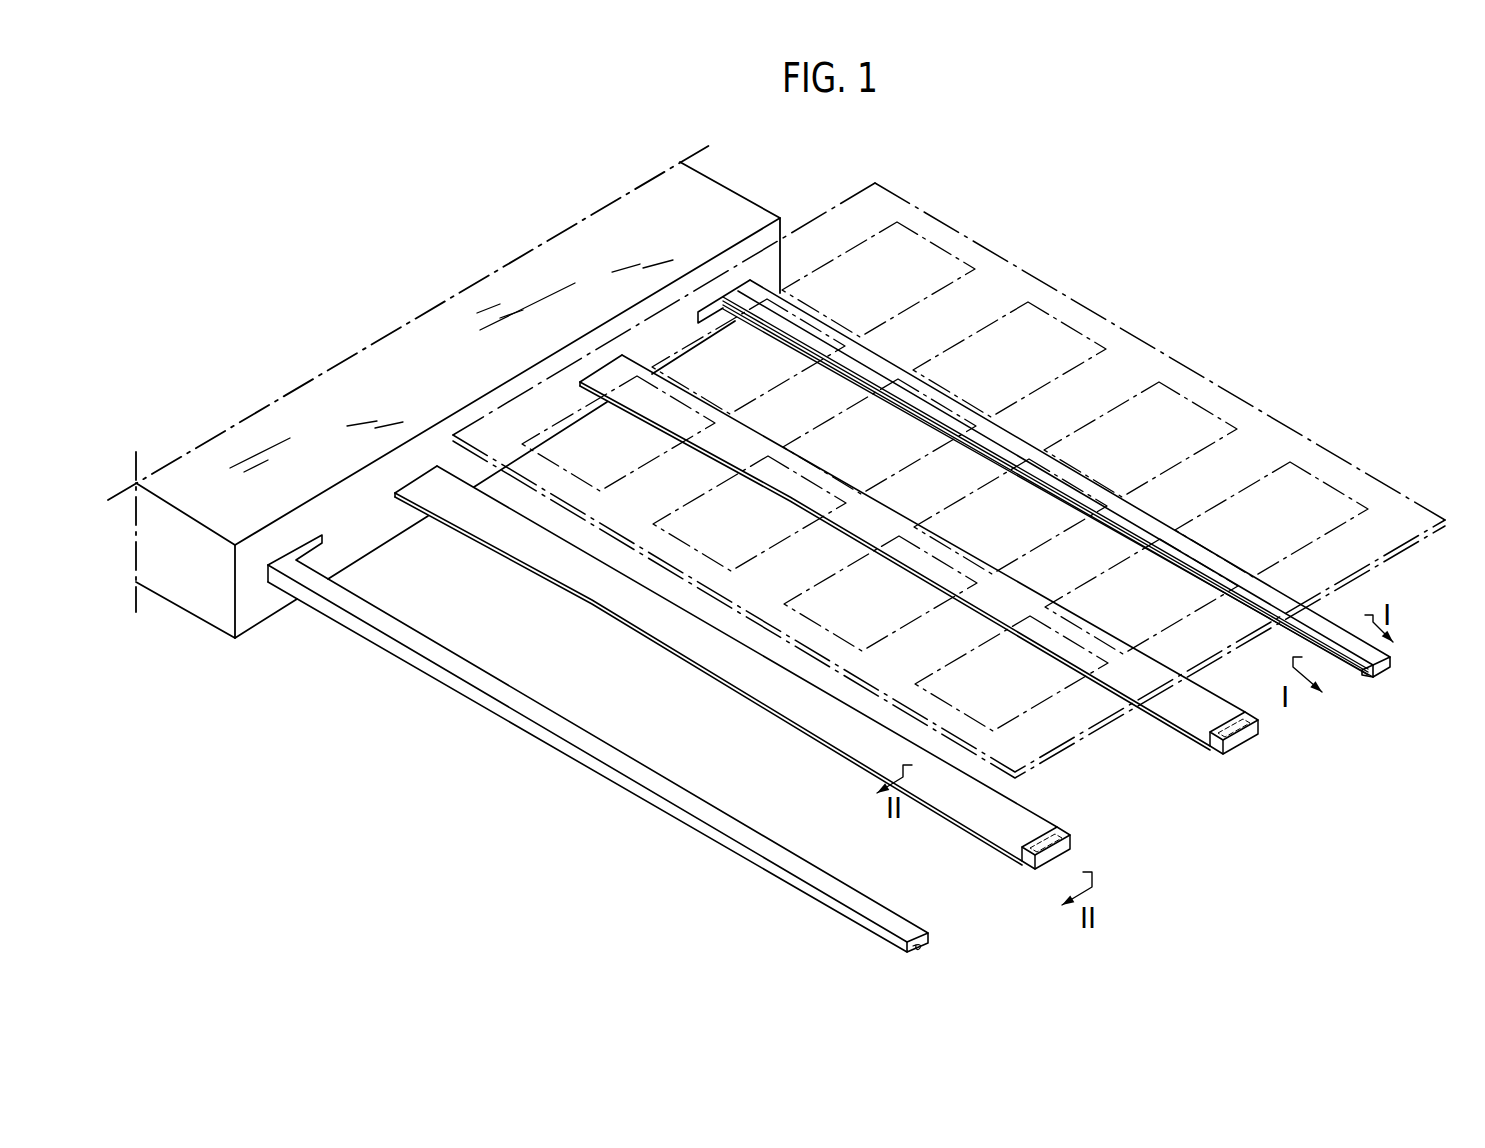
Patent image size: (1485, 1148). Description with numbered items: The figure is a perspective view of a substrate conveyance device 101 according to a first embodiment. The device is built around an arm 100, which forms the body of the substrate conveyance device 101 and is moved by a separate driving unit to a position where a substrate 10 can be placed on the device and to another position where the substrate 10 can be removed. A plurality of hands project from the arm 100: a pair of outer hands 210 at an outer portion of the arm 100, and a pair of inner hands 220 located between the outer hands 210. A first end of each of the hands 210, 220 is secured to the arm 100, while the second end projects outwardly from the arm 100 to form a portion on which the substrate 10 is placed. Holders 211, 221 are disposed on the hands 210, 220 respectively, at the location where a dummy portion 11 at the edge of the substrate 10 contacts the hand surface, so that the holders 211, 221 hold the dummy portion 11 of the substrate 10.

The arm 100 is at (739, 185).
The substrate conveyance device 101 is at (1000, 171).
The substrate 10 is at (993, 241).
The dummy portion 11 is at (1083, 317).
The outer hand 210 is at (1317, 620).
The holder 211 is at (1366, 675).
The inner hand 220 is at (1010, 824).
The holder 221 is at (1254, 737).